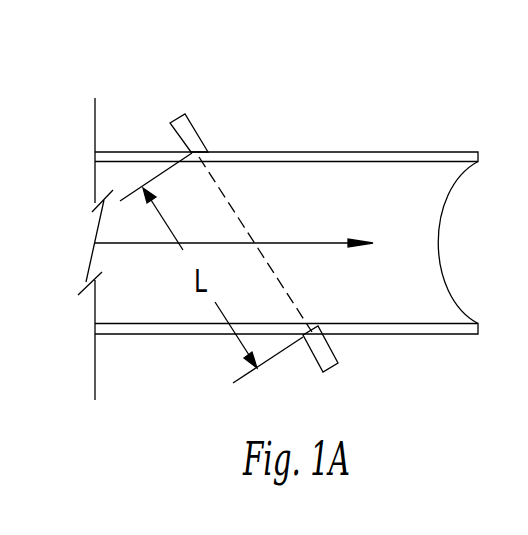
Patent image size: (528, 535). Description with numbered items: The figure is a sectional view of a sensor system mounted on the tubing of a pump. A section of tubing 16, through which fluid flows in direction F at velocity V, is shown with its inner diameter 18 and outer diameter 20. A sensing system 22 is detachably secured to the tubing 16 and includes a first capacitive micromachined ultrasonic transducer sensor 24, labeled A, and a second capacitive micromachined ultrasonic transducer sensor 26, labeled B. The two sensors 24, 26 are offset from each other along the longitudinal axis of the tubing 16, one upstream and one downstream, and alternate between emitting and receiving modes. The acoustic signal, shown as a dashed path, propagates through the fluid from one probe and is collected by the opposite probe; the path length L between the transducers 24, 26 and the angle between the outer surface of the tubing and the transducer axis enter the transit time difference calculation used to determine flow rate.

The tubing 16 is at (268, 204).
The inner diameter 18 is at (350, 161).
The outer diameter 20 is at (303, 152).
The sensing system 22 is at (110, 45).
The first capacitive micromachined ultrasonic transducer sensor 24 is at (193, 124).
The second capacitive micromachined ultrasonic transducer sensor 26 is at (316, 360).